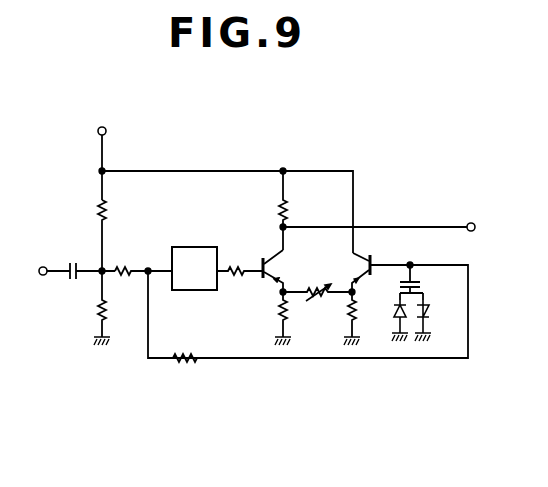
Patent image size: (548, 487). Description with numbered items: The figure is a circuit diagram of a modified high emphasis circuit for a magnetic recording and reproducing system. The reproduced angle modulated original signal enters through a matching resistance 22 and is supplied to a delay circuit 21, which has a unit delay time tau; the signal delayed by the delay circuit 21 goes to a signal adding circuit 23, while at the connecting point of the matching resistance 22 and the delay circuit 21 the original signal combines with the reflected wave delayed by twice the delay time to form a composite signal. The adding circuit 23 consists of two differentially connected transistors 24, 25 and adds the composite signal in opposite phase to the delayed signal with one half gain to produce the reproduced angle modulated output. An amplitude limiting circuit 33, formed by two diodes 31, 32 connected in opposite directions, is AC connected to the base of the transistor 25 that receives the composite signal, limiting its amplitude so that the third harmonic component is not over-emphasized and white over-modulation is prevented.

The delay circuit 21 is at (193, 246).
The matching resistance 22 is at (128, 266).
The adding circuit 23 is at (275, 246).
The transistor 24 is at (273, 282).
The transistor 25 is at (352, 254).
The diode 31 is at (407, 319).
The diode 32 is at (429, 317).
The amplitude limiting circuit 33 is at (426, 350).